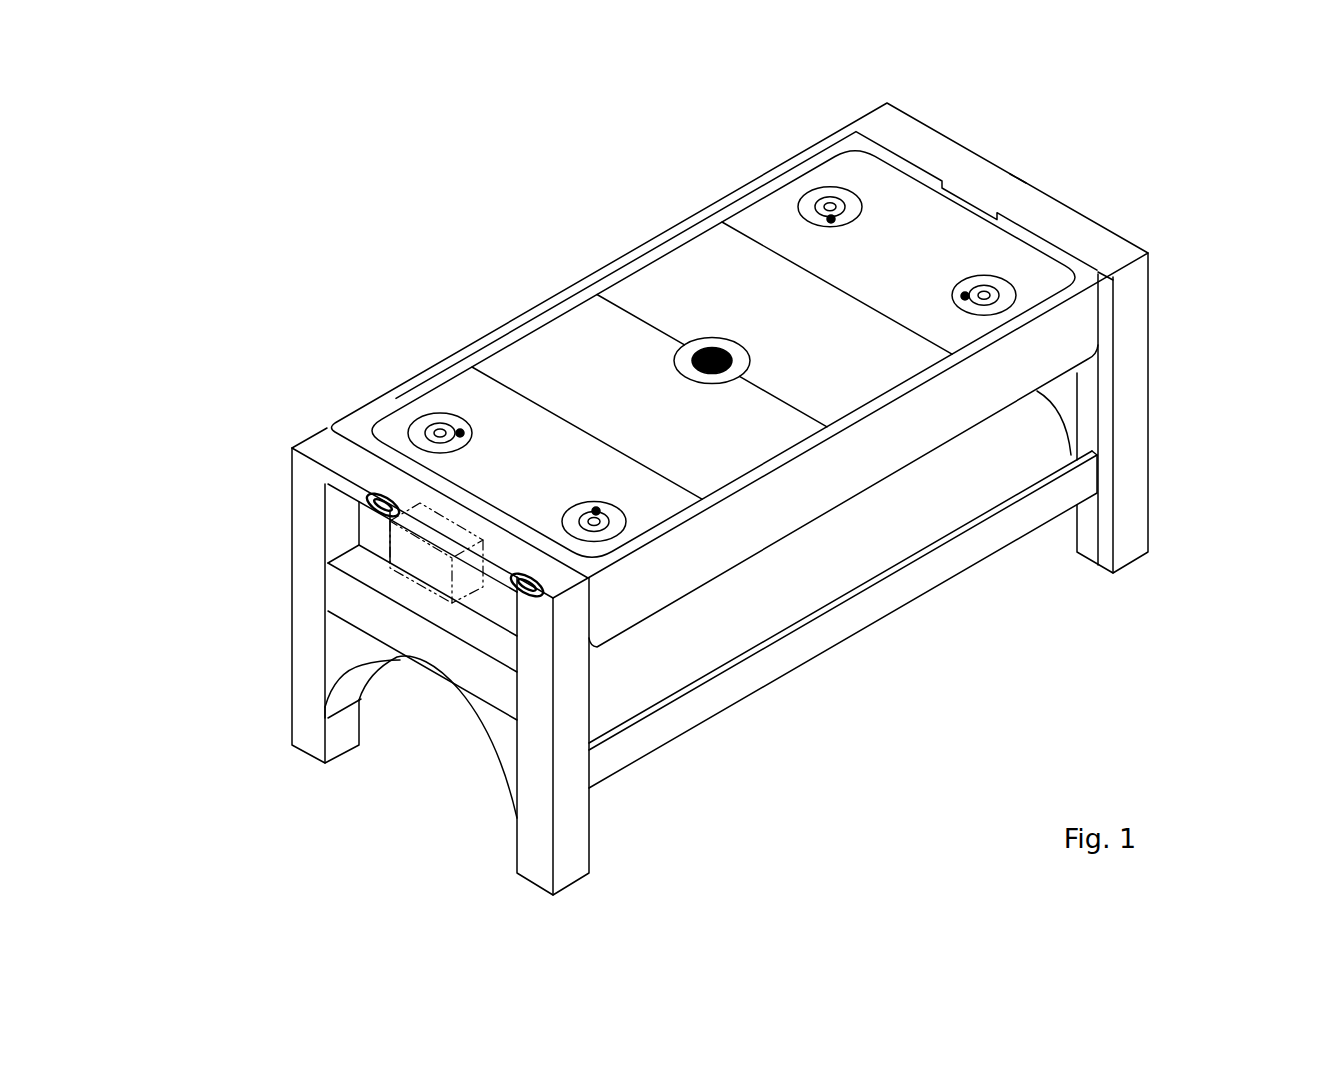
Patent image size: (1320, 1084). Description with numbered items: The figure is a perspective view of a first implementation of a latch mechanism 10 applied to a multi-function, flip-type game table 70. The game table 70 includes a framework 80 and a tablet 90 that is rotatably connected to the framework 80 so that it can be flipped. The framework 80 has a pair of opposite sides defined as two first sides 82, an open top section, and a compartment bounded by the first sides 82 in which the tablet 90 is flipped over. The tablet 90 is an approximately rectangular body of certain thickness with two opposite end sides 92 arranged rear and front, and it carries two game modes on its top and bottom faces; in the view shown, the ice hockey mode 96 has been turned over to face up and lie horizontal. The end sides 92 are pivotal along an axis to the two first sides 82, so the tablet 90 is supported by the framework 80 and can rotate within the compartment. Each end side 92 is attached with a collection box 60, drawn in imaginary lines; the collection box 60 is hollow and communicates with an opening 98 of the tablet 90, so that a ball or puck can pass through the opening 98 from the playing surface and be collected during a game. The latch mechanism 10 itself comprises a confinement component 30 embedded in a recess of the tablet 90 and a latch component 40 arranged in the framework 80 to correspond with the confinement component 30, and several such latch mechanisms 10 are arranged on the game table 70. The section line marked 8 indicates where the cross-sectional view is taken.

The latch mechanism 10 is at (876, 753).
The confinement component 30 is at (384, 500).
The latch component 40 is at (372, 523).
The collection box 60 is at (412, 568).
The flip-type game table 70 is at (1257, 347).
The framework 80 is at (1165, 477).
The first sides 82 is at (1088, 241).
The tablet 90 is at (1068, 345).
The end sides 92 is at (942, 190).
The ice hockey mode 96 is at (677, 293).
The opening 98 is at (1018, 178).
The section line 8- 8 is at (170, 418).